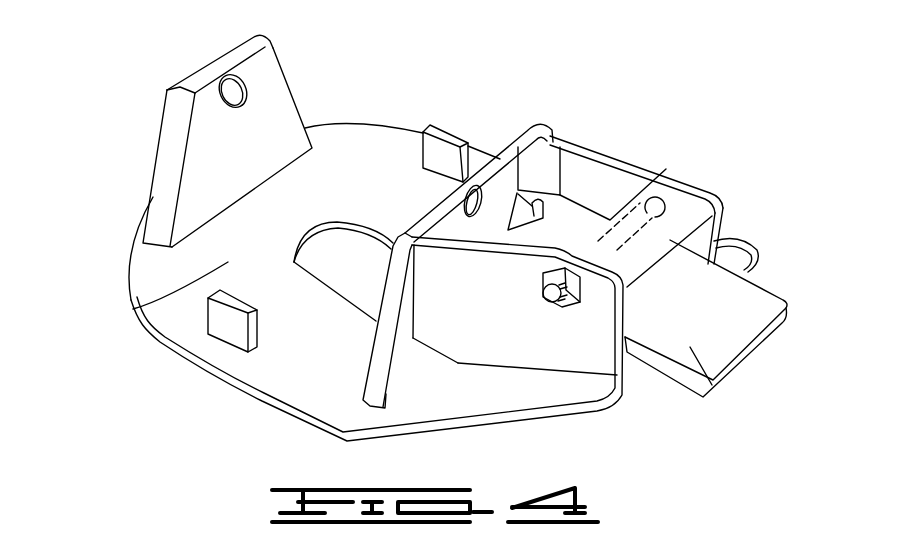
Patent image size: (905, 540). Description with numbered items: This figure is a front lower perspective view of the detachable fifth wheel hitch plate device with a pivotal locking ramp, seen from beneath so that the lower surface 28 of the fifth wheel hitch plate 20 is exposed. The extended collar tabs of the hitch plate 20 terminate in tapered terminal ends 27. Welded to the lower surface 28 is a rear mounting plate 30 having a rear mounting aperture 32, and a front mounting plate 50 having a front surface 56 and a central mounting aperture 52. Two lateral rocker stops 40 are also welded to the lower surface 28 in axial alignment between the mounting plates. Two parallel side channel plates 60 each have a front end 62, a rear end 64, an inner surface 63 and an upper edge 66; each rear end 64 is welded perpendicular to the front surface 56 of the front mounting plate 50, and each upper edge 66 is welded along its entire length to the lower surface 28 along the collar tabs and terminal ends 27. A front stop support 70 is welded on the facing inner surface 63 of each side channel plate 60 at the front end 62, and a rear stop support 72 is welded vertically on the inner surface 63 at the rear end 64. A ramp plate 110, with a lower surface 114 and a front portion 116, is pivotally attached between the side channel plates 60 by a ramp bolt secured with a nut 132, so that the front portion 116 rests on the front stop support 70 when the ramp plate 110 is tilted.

The fifth wheel hitch plate 20 is at (350, 121).
The tapered terminal ends 27 is at (752, 255).
The lower surface 28 is at (133, 309).
The rear mounting plate 30 is at (285, 77).
The rear mounting aperture 32 is at (231, 92).
The lateral rocker stops 40 is at (440, 127).
The front mounting plate 50 is at (557, 130).
The central mounting aperture 52 is at (476, 186).
The front surface 56 is at (398, 359).
The side channel plates 60 is at (640, 155).
The front end 62 is at (717, 222).
The inner surface 63 is at (643, 177).
The rear end 64 is at (437, 350).
The upper edge 66 is at (510, 363).
The front stop support 70 is at (697, 208).
The rear stop support 72 is at (543, 177).
The ramp plate 110 is at (770, 305).
The lower surface 114 is at (712, 385).
The front portion 116 is at (758, 345).
The nut 132 is at (562, 303).